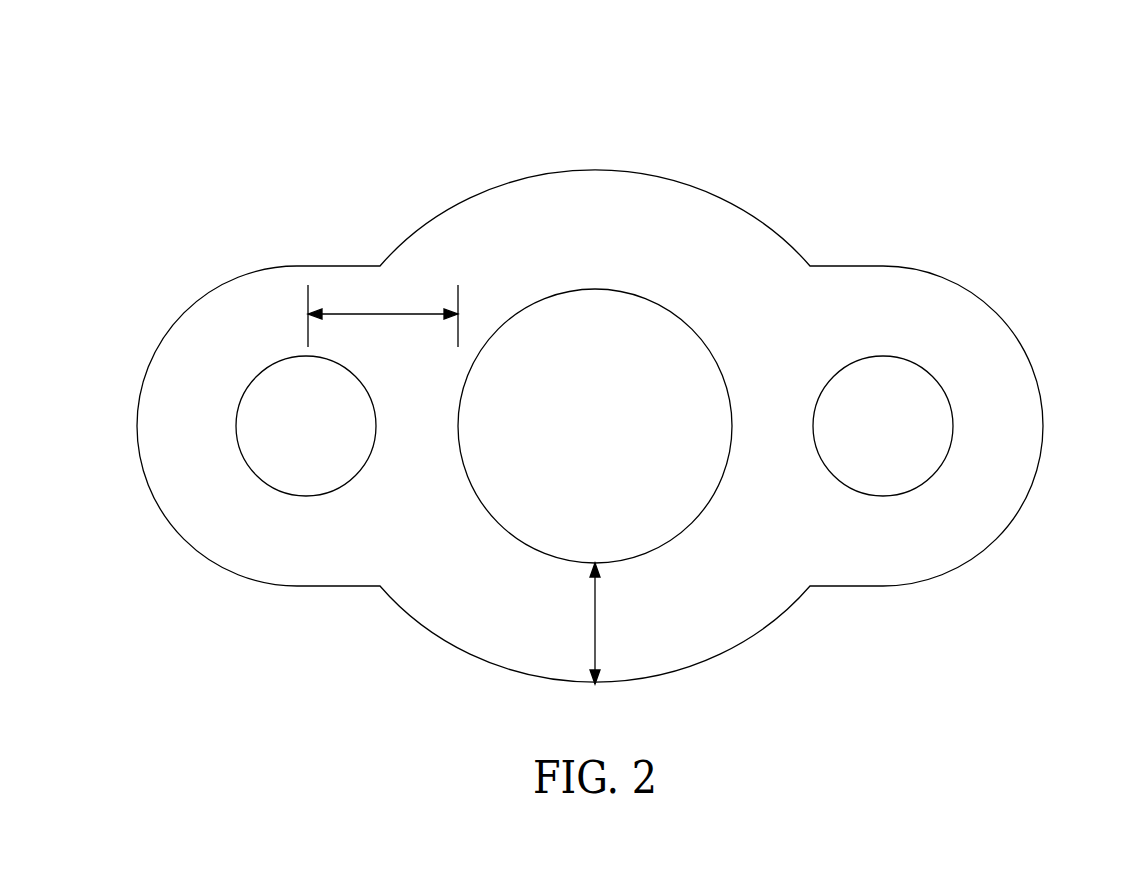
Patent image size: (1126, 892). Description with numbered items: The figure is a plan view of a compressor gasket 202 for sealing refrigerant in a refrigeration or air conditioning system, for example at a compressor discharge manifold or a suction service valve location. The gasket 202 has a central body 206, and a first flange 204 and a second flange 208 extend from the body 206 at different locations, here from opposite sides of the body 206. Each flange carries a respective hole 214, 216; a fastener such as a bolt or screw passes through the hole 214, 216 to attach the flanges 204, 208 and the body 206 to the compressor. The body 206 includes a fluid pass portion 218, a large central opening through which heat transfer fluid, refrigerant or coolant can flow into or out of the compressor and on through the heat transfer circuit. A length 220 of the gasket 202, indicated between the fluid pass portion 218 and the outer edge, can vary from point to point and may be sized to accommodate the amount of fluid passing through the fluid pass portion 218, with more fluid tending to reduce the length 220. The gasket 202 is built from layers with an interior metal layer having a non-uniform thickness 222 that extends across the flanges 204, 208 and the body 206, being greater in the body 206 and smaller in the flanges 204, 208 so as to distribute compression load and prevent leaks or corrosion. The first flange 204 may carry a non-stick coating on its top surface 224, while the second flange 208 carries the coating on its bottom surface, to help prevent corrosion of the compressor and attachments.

The compressor gasket 202 is at (587, 376).
The first flange 204 is at (258, 310).
The body 206 is at (498, 223).
The second flange 208 is at (903, 303).
The hole 214 is at (282, 407).
The hole 216 is at (908, 402).
The fluid pass portion 218 is at (609, 330).
The length 220 is at (595, 623).
The non-uniform thickness 222 is at (407, 313).
The top surface 224 is at (700, 255).